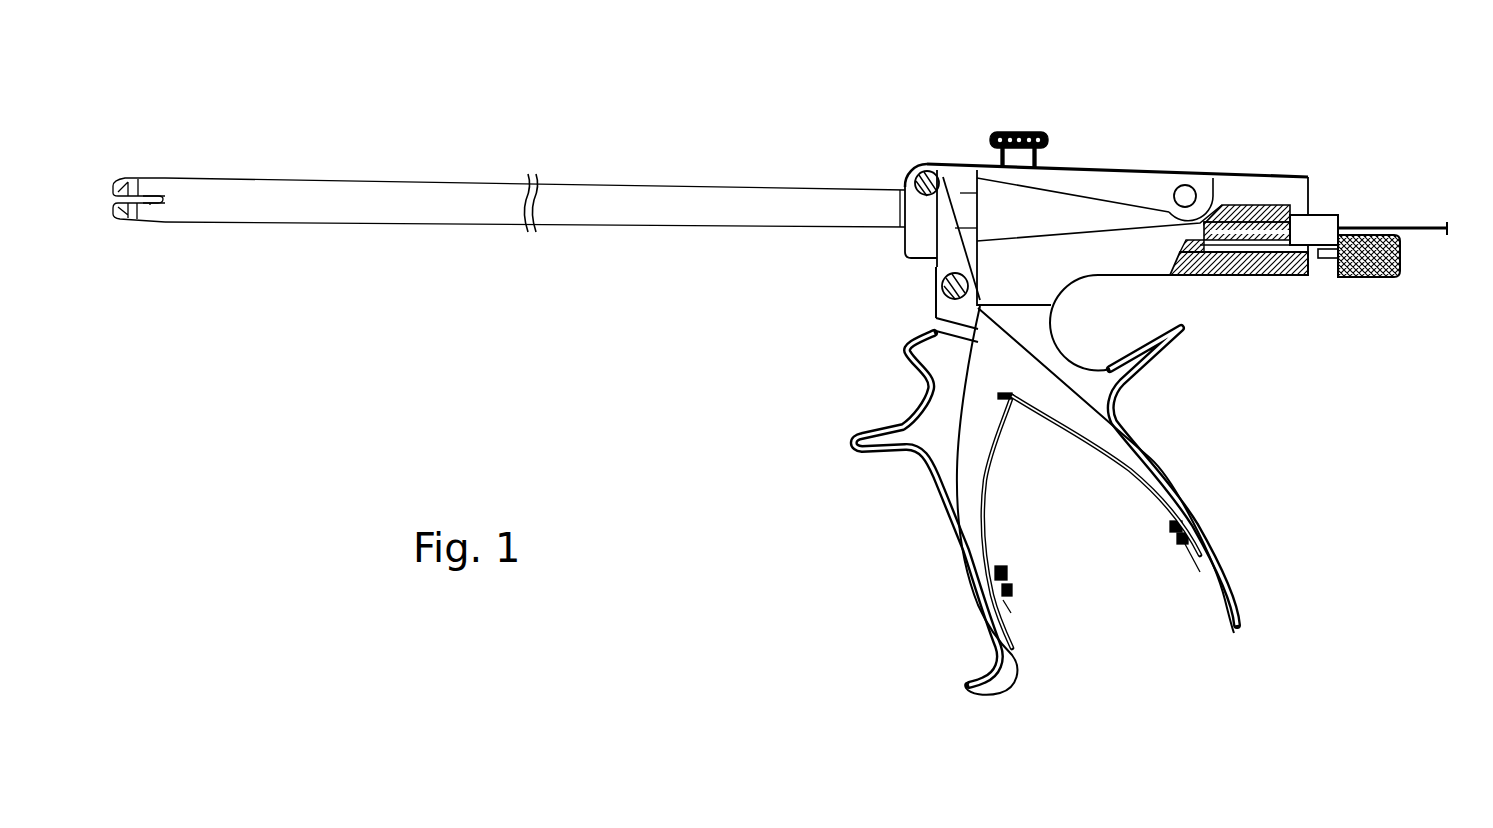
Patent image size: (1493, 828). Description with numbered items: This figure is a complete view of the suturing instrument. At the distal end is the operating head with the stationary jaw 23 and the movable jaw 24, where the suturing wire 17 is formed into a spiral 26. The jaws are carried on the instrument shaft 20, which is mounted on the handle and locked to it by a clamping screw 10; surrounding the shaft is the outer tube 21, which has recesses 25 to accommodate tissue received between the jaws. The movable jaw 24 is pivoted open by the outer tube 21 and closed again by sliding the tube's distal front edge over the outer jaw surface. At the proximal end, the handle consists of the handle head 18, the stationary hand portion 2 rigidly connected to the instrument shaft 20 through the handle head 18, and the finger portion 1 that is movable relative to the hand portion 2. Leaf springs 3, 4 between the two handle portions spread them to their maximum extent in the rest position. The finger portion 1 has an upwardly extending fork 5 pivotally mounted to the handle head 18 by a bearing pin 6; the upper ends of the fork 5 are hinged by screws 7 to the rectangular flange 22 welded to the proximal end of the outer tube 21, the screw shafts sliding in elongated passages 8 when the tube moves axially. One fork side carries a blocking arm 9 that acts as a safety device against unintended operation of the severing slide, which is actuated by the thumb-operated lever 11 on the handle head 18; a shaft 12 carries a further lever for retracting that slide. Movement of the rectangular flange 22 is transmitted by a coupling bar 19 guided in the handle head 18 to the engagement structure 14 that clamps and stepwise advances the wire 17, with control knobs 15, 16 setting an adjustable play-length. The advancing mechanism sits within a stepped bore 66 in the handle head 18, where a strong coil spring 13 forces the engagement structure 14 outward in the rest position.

The finger portion 1 is at (940, 414).
The hand portion 2 is at (1098, 392).
The leaf spring 3 is at (980, 532).
The leaf spring 4 is at (1158, 490).
The fork 5 is at (952, 235).
The bearing pin 6 is at (950, 298).
The screws 7 is at (918, 165).
The elongated passages 8 is at (900, 240).
The blocking arm 9 is at (934, 266).
The clamping screw 10 is at (1031, 136).
The lever 11 is at (1092, 193).
The shaft 12 is at (1187, 185).
The coil spring 13 is at (1250, 208).
The engagement structure 14 is at (1282, 205).
The control knob 15 is at (1328, 218).
The control knob 16 is at (1378, 232).
The suturing wire 17 is at (1438, 222).
The handle head 18 is at (1287, 275).
The coupling bar 19 is at (1312, 258).
The instrument shaft 20 is at (966, 205).
The outer tube 21 is at (626, 192).
The rectangular flange 22 is at (900, 197).
The stationary jaw 23 is at (124, 212).
The movable jaw 24 is at (123, 188).
The recesses 25 is at (150, 205).
The spiral 26 is at (148, 198).
The stepped bore 66 is at (1245, 262).